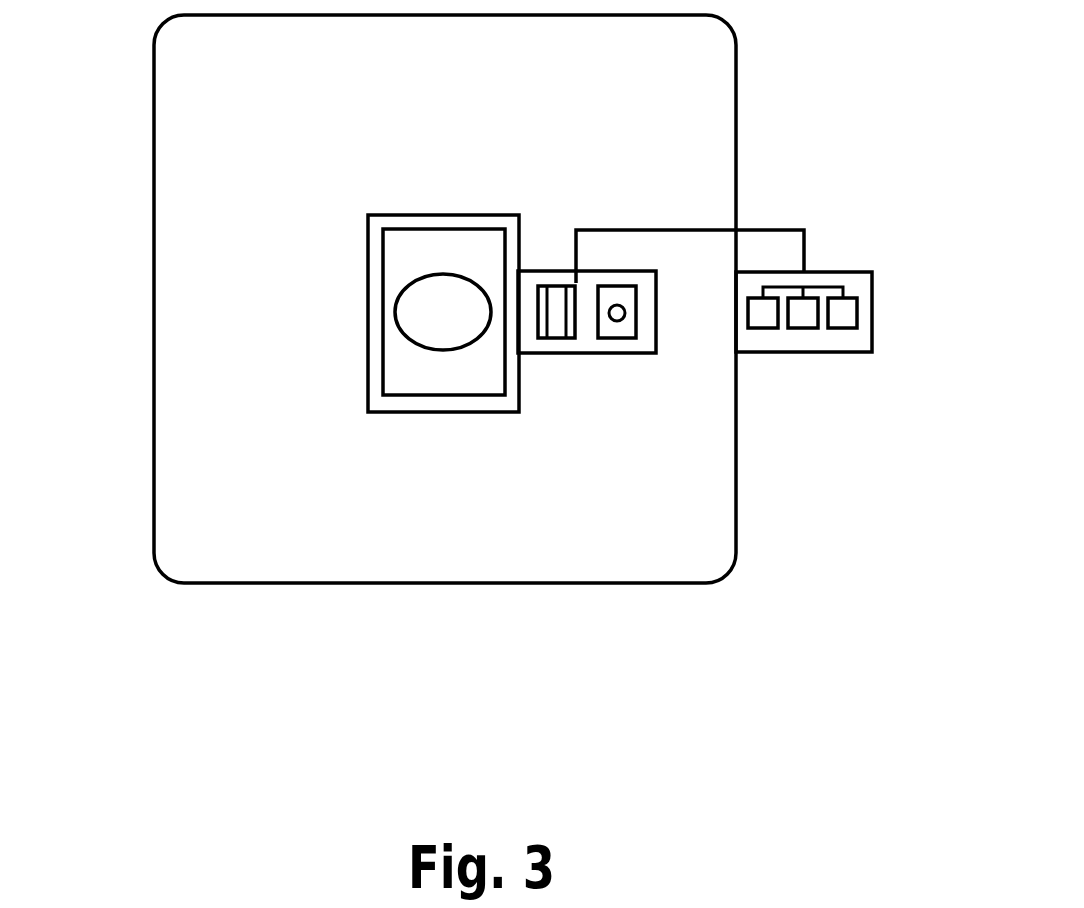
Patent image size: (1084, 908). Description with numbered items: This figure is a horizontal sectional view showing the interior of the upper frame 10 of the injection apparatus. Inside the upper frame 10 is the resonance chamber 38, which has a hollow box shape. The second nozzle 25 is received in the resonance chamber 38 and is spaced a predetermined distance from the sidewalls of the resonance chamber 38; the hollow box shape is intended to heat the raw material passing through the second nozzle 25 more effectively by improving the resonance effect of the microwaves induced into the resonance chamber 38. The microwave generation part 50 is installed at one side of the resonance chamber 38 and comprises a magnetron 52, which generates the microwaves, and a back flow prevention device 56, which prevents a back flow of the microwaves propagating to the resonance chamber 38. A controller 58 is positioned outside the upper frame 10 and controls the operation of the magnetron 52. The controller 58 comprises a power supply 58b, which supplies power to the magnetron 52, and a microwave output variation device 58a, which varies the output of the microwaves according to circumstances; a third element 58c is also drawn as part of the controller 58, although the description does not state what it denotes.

The upper frame 10 is at (150, 593).
The second nozzle 25 is at (427, 307).
The resonance chamber 38 is at (410, 395).
The microwave generation part 50 is at (577, 356).
The magnetron 52 is at (622, 285).
The back flow prevention device 56 is at (557, 285).
The controller 58 is at (769, 319).
The microwave output variation device 58a is at (760, 312).
The power supply 58b is at (810, 303).
The third indicator 58c is at (850, 312).